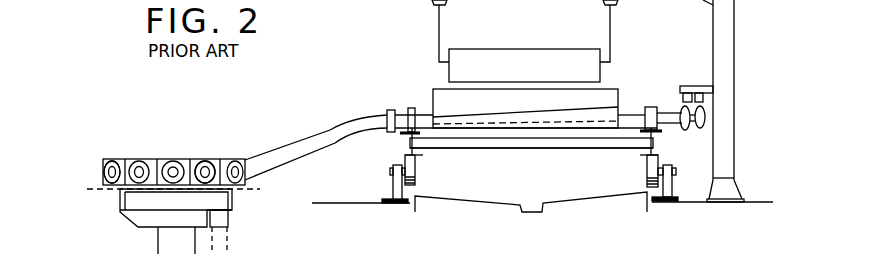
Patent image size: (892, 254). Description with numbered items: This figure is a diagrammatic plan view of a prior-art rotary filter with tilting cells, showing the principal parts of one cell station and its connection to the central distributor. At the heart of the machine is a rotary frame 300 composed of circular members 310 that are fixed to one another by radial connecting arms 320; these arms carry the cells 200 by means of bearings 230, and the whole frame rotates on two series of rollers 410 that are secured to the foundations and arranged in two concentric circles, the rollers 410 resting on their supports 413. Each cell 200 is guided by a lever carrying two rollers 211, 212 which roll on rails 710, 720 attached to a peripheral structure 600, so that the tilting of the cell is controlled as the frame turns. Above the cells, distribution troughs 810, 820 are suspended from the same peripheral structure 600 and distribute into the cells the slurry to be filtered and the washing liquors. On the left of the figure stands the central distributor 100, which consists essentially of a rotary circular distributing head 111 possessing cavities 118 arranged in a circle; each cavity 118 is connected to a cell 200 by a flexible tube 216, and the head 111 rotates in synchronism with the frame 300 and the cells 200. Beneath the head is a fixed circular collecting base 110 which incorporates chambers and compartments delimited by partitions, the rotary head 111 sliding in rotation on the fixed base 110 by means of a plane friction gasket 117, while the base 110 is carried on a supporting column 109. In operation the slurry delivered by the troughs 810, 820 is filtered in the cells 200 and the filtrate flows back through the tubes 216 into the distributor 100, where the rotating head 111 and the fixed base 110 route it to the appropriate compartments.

The central distributor 100 is at (151, 158).
The rotary circular distributing head 111 is at (98, 157).
The cavities 118 is at (204, 159).
The plane friction gasket 117 is at (235, 191).
The fixed circular collecting base 110 is at (120, 214).
The support column 109 is at (217, 232).
The flexible tubes 216 is at (312, 145).
The bearings 230 is at (418, 96).
The circular members 310 is at (404, 137).
The cells 200 is at (617, 90).
The distribution trough 810 is at (525, 41).
The distribution trough 820 is at (560, 46).
The rotary frame 300 is at (637, 156).
The radial connecting arms 320 is at (563, 150).
The rollers 410 is at (418, 164).
The bracket foot 413 is at (406, 206).
The roller 211 is at (702, 110).
The roller 212 is at (688, 129).
The peripheral structure 600 is at (735, 34).
The rail 720 is at (703, 97).
The rail 710 is at (704, 102).